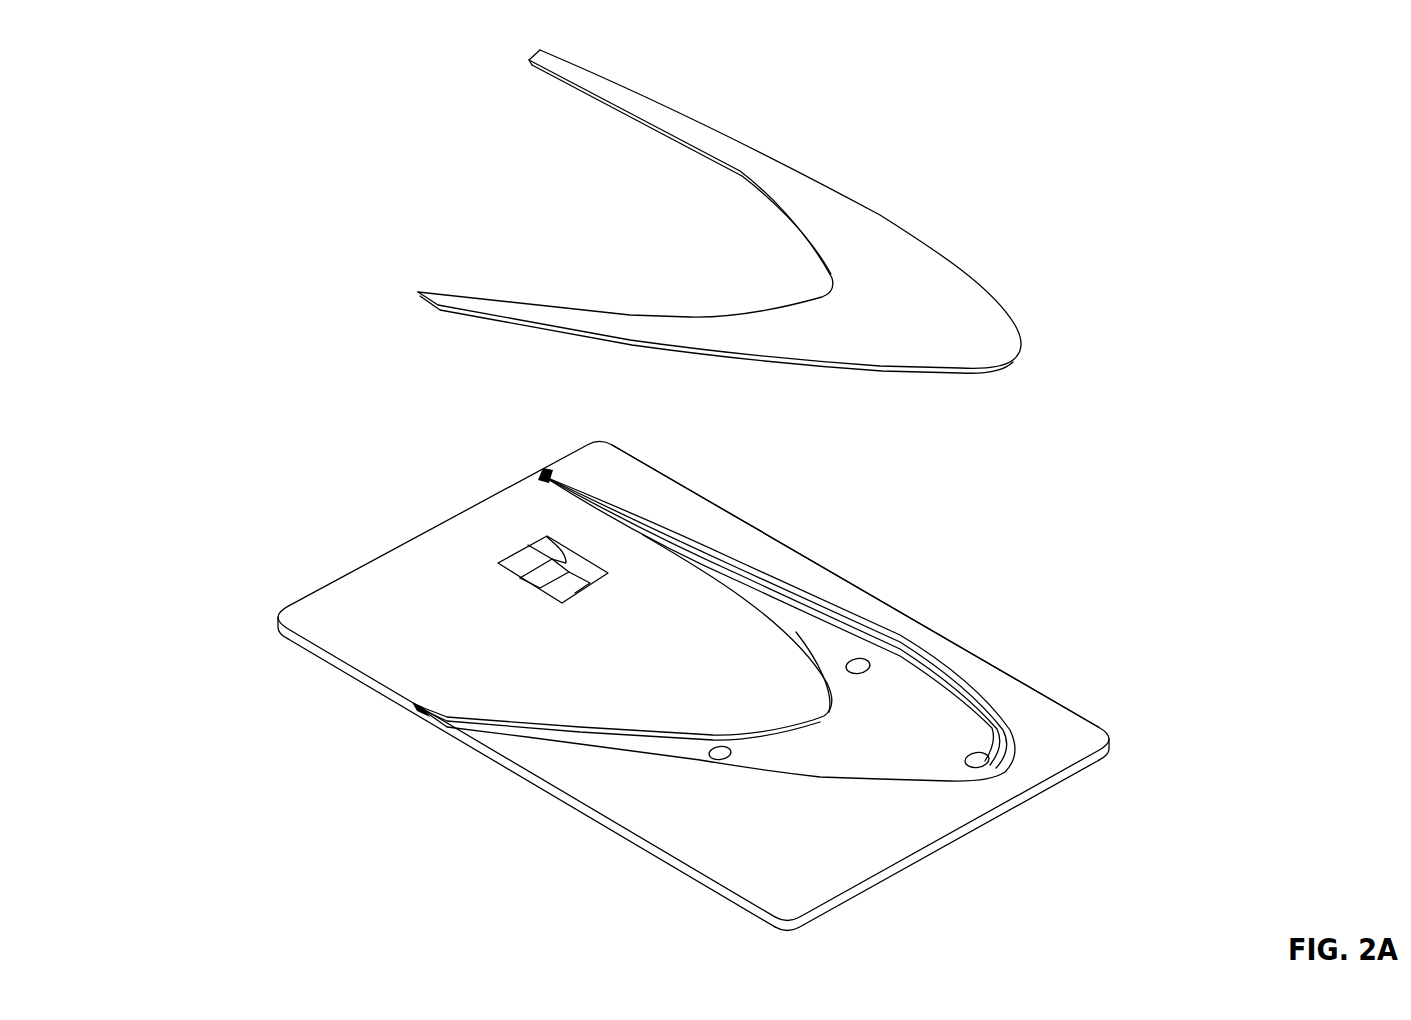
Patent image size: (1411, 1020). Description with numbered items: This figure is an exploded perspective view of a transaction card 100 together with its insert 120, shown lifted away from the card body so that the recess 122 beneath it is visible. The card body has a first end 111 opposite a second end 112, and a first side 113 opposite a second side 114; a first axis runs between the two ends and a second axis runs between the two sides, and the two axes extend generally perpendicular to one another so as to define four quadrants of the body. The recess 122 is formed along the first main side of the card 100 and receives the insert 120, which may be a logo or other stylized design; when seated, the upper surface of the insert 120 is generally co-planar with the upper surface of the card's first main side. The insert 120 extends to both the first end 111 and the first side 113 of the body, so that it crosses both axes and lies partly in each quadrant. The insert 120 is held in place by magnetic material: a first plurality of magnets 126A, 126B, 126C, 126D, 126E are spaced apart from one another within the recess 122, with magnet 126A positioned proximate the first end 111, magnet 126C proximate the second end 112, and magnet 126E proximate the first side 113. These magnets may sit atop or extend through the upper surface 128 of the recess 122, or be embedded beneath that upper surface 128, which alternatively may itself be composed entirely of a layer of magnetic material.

The card 100 is at (200, 80).
The first end 111 is at (444, 518).
The second end 112 is at (961, 843).
The first side 113 is at (627, 843).
The second side 114 is at (773, 534).
The insert 120 is at (821, 207).
The recess 122 is at (724, 628).
The magnet 126A is at (543, 473).
The magnet 126B is at (861, 658).
The magnet 126C is at (985, 762).
The magnet 126D is at (715, 760).
The magnet 126E is at (447, 727).
The upper surface of the recess 128 is at (807, 623).